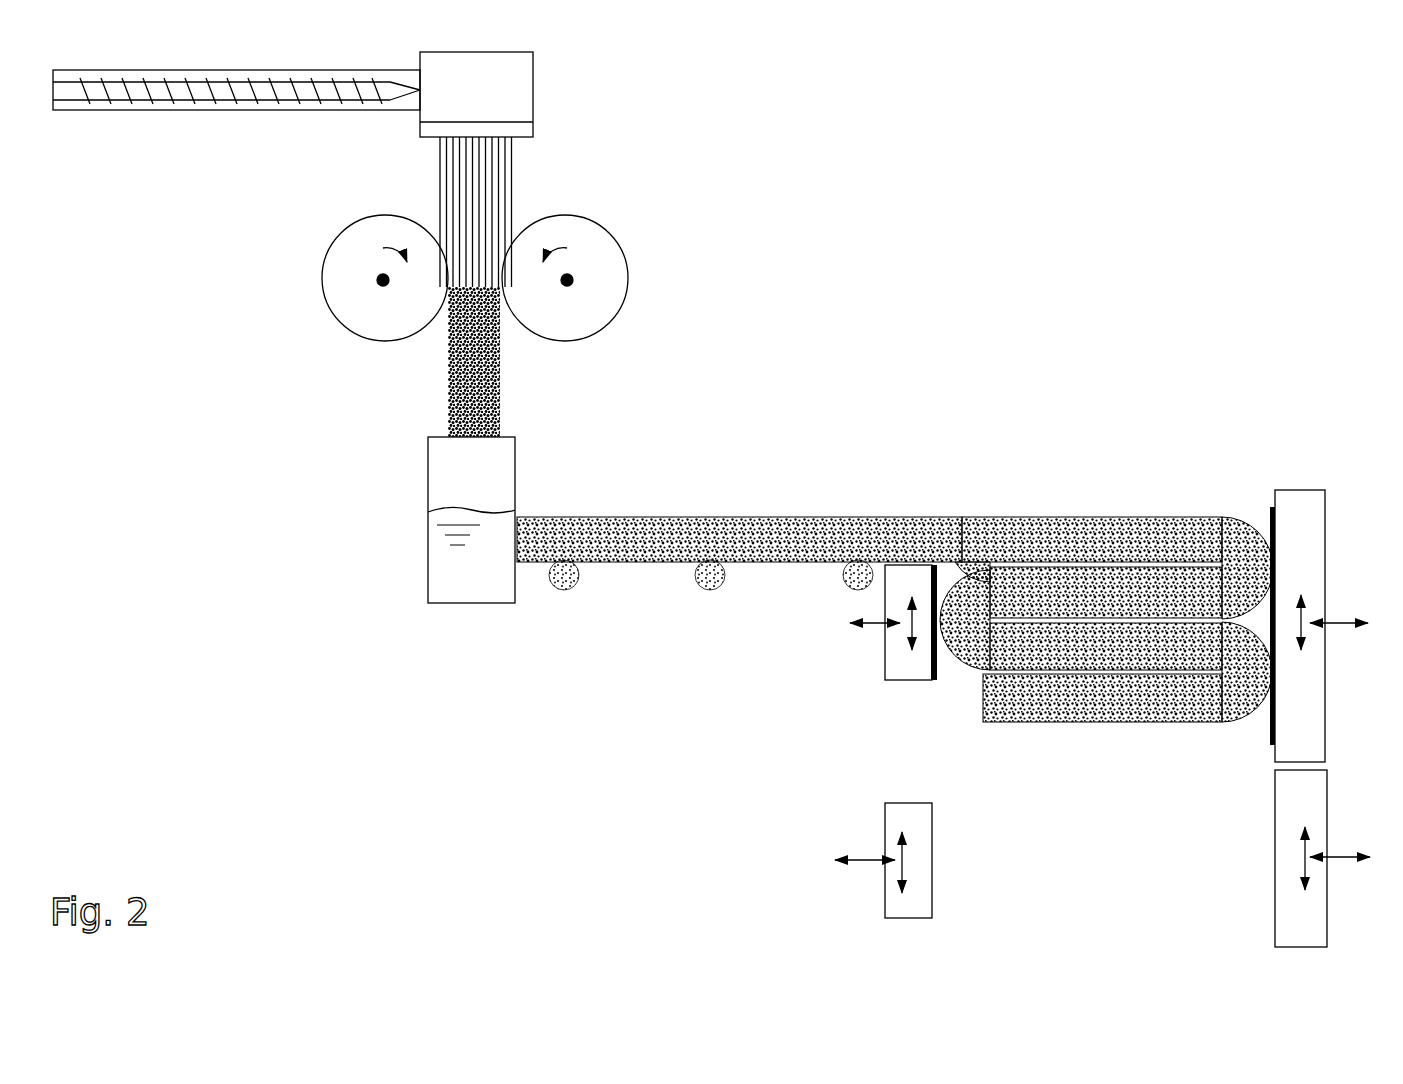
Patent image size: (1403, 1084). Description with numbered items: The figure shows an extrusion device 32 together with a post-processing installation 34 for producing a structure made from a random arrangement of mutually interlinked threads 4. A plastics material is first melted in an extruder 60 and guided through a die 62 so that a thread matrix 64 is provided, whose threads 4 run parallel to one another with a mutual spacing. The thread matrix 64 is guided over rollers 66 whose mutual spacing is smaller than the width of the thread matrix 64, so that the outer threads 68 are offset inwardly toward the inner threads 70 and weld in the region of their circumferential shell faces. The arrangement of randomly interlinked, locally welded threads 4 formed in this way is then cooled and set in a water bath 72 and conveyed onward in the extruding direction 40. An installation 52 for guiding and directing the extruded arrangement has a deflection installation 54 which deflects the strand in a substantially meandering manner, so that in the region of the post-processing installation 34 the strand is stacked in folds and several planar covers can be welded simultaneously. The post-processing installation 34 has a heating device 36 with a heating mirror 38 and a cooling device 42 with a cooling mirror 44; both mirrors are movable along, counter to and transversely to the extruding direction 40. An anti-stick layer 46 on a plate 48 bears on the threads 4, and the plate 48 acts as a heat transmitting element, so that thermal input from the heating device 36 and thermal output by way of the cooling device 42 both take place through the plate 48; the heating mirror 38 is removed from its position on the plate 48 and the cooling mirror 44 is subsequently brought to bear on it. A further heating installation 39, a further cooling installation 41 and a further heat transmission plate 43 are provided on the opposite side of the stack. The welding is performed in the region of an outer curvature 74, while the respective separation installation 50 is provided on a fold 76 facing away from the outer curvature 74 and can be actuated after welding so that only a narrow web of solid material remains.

The threads 4 is at (455, 173).
The extrusion device 32 is at (173, 375).
The post-processing installation 34 is at (1274, 348).
The heating device 36 is at (1326, 480).
The heating mirror 38 is at (1317, 563).
The further heating installation 39 is at (880, 672).
The extruding direction 40 is at (685, 498).
The further cooling installation 41 is at (880, 812).
The cooling device 42 is at (1328, 800).
The further heat transmission plate 43 is at (965, 520).
The cooling mirror 44 is at (1320, 928).
The anti-stick layer 46 is at (1272, 525).
The plate 48 is at (1277, 565).
The separation installation 50 is at (1028, 528).
The installation for guiding and directing 52 is at (881, 393).
The deflection installation 54 is at (1097, 503).
The extruder 60 is at (133, 113).
The die 62 is at (513, 128).
The thread matrix 64 is at (412, 162).
The rollers 66 is at (340, 292).
The outer threads 68 is at (513, 176).
The inner threads 70 is at (477, 225).
The water bath 72 is at (427, 485).
The outer curvature 74 is at (1277, 574).
The fold 76 is at (1207, 525).